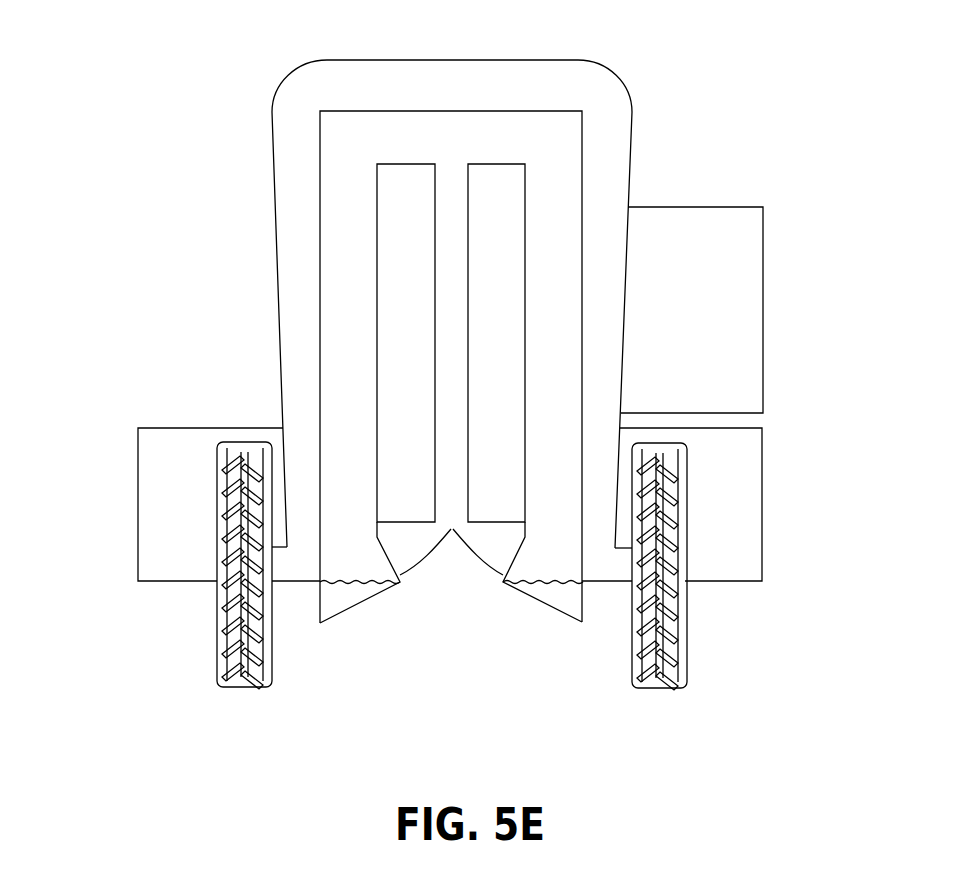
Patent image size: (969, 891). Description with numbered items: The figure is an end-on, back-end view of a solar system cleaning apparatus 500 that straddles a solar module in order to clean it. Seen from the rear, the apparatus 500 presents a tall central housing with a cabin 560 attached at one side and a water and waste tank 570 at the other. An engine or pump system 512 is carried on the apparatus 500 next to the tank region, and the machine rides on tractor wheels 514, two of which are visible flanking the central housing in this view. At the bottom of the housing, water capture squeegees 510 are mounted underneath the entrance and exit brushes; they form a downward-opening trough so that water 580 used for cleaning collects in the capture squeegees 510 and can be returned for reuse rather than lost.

The solar system cleaning apparatus 500 is at (723, 57).
The water capture squeegees 510 is at (552, 608).
The engine or pump system 512 is at (743, 498).
The tractor wheels 514 is at (683, 670).
The cabin 560 is at (743, 282).
The water and waste tank 570 is at (148, 507).
The water 580 is at (348, 597).